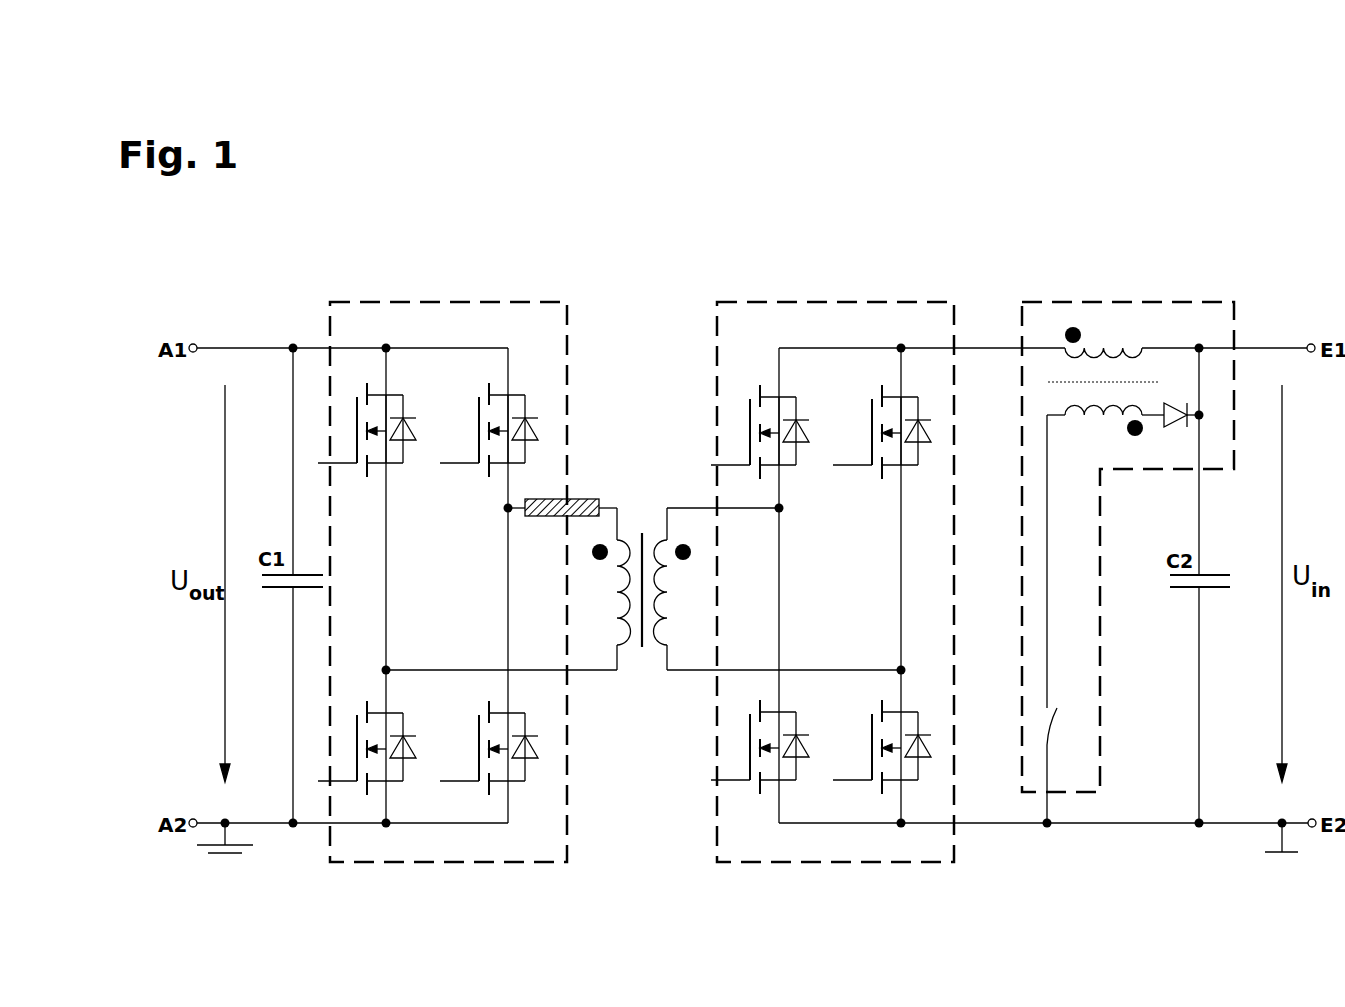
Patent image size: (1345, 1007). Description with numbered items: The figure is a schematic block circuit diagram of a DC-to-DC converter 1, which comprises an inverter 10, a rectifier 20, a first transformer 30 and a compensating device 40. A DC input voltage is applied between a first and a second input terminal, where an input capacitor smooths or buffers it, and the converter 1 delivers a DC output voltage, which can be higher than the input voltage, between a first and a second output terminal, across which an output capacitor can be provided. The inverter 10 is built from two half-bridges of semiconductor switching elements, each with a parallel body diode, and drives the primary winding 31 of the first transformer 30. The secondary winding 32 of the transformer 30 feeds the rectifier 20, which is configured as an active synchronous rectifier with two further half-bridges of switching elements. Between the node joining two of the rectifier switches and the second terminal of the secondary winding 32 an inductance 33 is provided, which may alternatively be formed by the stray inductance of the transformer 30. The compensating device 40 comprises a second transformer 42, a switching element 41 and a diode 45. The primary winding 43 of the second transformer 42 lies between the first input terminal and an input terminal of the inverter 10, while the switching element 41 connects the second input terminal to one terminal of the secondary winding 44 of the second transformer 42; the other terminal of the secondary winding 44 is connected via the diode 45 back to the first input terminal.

The DC-to-DC converter 1 is at (268, 270).
The inverter 10 is at (852, 301).
The rectifier 20 is at (431, 301).
The first transformer 30 is at (641, 610).
The primary winding 31 is at (661, 540).
The secondary winding 32 is at (627, 540).
The inductance 33 is at (583, 499).
The compensating device 40 is at (1094, 517).
The switching element 41 is at (1052, 727).
The second transformer 42 is at (1046, 372).
The primary winding 43 is at (1110, 357).
The secondary winding 44 is at (1077, 408).
The diode 45 is at (1185, 420).